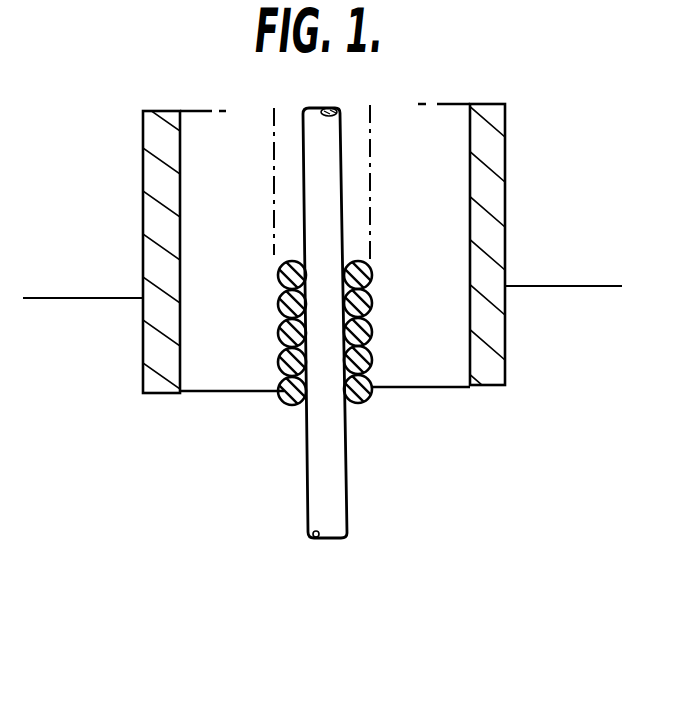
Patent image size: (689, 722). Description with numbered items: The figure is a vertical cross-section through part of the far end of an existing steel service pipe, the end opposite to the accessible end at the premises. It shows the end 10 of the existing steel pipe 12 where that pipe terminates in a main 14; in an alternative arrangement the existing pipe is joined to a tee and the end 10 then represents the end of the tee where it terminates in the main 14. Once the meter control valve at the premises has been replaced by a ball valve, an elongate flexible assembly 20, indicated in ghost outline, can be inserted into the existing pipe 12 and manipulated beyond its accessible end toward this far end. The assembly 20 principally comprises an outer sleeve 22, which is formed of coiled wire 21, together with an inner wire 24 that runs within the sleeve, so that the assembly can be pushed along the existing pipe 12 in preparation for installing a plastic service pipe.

The end 10 is at (487, 383).
The existing steel pipe 12 is at (495, 157).
The main 14 is at (585, 246).
The elongate flexible assembly 20 is at (311, 378).
The coiled wire 21 is at (362, 303).
The outer sleeve 22 is at (256, 303).
The inner wire 24 is at (341, 500).